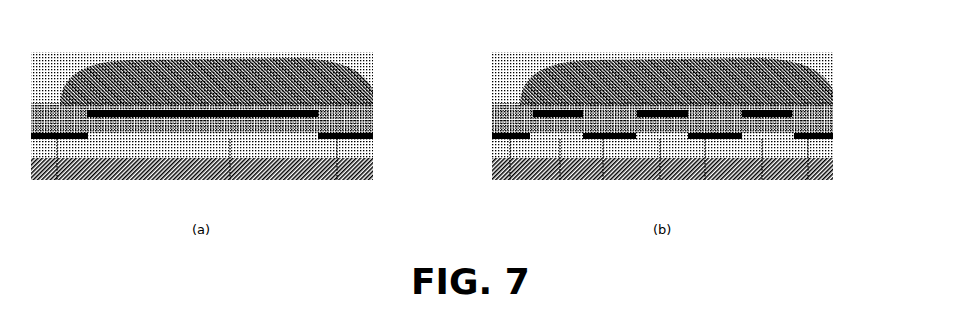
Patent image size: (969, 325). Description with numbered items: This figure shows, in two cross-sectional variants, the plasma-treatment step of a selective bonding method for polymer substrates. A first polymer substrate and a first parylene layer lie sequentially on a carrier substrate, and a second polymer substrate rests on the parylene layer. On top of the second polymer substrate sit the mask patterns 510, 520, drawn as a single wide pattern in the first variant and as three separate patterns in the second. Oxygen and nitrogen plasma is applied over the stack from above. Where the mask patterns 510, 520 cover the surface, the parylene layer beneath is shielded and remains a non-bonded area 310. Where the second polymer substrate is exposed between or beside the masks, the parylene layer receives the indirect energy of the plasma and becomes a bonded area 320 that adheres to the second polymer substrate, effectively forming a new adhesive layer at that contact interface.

The non-bonded area 310 is at (230, 180).
The bonded area 320 is at (60, 180).
The mask pattern 510 is at (303, 110).
The mask pattern 520 is at (690, 100).